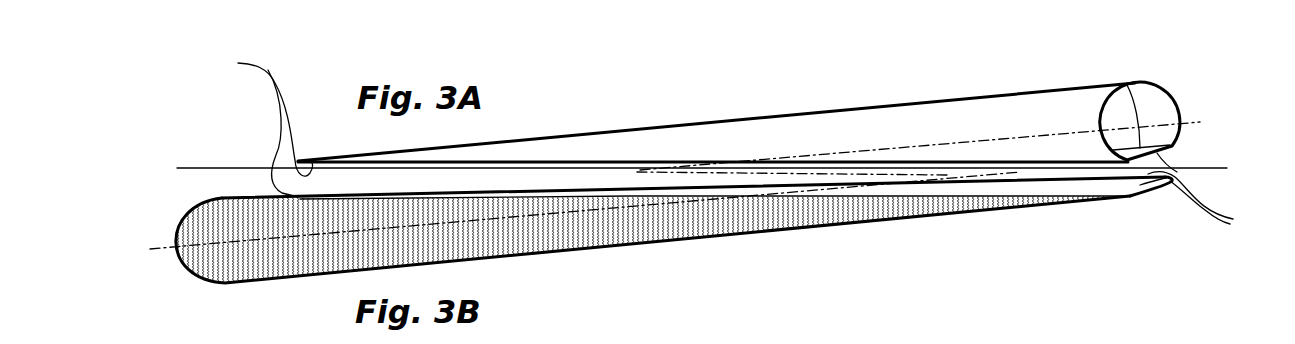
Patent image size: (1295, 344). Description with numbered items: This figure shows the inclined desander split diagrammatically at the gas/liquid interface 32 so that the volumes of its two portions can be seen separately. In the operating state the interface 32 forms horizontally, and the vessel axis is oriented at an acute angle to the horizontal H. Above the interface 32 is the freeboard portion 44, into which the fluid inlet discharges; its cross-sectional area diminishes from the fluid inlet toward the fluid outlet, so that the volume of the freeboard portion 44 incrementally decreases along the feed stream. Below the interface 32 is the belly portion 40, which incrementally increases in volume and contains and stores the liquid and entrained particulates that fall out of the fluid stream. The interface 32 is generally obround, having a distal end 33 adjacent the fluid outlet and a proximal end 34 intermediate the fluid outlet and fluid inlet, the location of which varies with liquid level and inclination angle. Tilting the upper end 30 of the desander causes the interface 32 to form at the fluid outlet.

In FIG. 3A, the horizontal H is at (217, 168).
In FIG. 3B, the upper end 30 is at (1023, 187).
In FIG. 3A, the gas/liquid interface 32 is at (1125, 84).
In FIG. 3A, the distal end 33 is at (259, 124).
In FIG. 3A, the proximal end 34 is at (1204, 193).
In FIG. 3B, the belly portion 40 is at (645, 220).
In FIG. 3A, the freeboard portion 44 is at (990, 138).